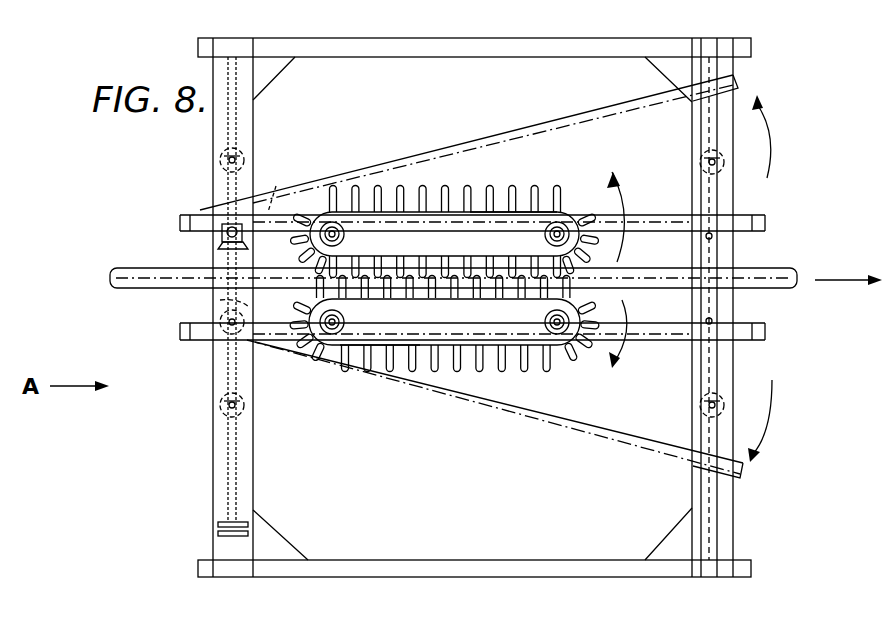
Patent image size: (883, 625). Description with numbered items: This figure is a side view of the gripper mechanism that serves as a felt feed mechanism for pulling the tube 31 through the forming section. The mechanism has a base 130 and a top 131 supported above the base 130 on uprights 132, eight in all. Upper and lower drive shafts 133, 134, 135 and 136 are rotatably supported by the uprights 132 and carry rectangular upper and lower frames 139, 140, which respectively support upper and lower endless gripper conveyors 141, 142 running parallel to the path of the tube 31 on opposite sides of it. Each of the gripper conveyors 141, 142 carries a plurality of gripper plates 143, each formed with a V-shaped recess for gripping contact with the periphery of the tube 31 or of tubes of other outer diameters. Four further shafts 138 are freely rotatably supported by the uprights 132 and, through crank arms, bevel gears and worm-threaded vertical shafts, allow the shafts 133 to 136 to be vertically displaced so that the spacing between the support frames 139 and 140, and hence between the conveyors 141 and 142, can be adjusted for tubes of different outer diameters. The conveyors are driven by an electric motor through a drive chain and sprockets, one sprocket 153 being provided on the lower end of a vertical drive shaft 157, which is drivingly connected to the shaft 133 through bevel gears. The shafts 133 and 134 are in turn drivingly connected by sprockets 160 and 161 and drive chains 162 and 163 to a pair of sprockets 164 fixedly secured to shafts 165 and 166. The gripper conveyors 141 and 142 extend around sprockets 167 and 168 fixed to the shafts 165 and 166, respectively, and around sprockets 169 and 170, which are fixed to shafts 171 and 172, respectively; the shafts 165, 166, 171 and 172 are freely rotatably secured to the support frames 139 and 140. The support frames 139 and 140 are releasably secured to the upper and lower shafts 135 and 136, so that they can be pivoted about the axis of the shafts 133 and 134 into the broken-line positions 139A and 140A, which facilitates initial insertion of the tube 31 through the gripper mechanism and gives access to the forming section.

The tube 31 is at (790, 272).
The base 130 is at (500, 540).
The top 131 is at (516, 16).
The uprights 132 is at (253, 492).
The upper drive shaft 133 is at (226, 240).
The lower drive shaft 134 is at (228, 322).
The upper shaft 135 is at (713, 238).
The lower shaft 136 is at (713, 322).
The further shafts 138 is at (220, 163).
The upper frame 139 is at (655, 218).
The pivoted position of upper support frame 139A is at (545, 131).
The lower frame 140 is at (657, 338).
The pivoted position of lower support frame 140A is at (590, 438).
The upper endless gripper conveyor 141 is at (432, 250).
The lower endless gripper conveyor 142 is at (440, 310).
The gripper plates 143 is at (541, 181).
The sprocket 153 is at (226, 532).
The vertical drive shaft 157 is at (236, 446).
The sprocket 160 is at (220, 300).
The sprocket 161 is at (215, 222).
The drive chain 162 is at (268, 345).
The drive chain 163 is at (278, 187).
The sprockets 164 is at (330, 334).
The shaft 165 is at (332, 224).
The shaft 166 is at (318, 330).
The sprocket 167 is at (353, 248).
The sprocket 168 is at (378, 346).
The sprocket 169 is at (522, 214).
The sprocket 170 is at (534, 340).
The shaft 171 is at (562, 214).
The shaft 172 is at (568, 312).